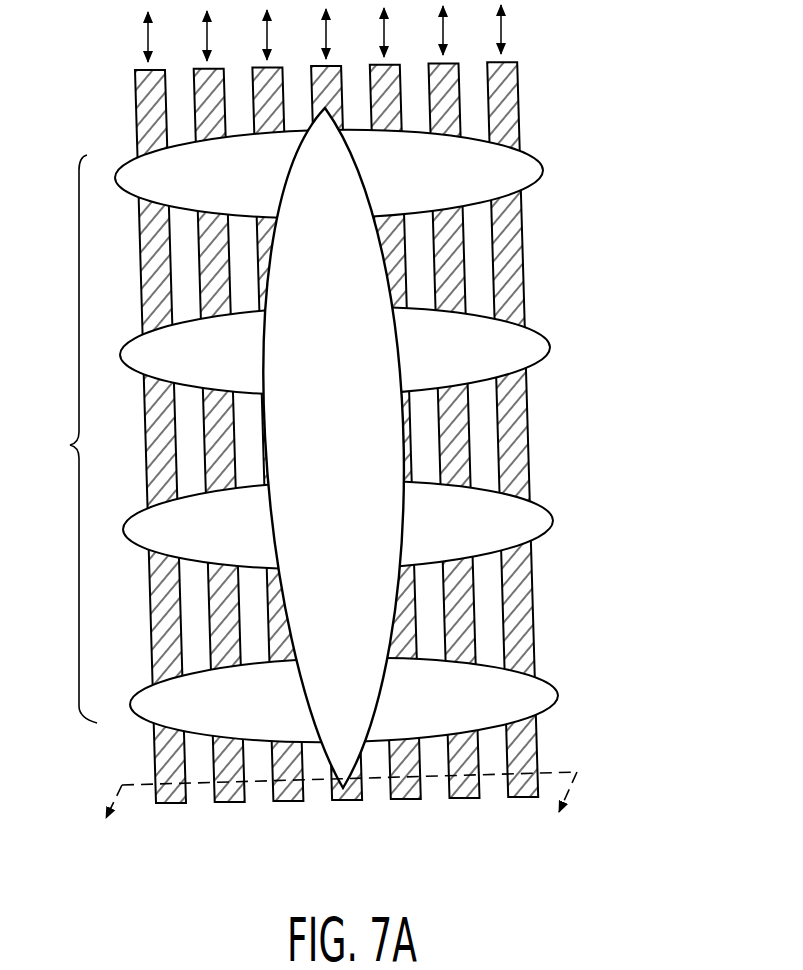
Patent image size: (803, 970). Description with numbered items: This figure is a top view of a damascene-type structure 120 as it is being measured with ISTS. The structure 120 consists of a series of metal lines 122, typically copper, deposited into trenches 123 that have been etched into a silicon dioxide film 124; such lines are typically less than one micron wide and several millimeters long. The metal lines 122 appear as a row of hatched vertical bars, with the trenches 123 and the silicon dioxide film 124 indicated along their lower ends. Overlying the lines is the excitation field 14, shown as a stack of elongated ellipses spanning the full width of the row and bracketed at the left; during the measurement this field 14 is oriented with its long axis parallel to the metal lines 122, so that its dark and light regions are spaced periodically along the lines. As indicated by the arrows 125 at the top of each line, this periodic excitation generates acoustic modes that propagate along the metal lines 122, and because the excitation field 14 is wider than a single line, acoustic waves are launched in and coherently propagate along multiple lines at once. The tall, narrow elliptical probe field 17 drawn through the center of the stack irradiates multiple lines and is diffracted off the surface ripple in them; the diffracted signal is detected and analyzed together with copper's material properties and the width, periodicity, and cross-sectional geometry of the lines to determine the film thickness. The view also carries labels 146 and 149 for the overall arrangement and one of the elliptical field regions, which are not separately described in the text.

The excitation radiation field 14 is at (63, 439).
The probe field 17 is at (350, 433).
The damascene-type structure 120 is at (588, 760).
The metal lines 122 is at (168, 806).
The trenches 123 is at (428, 801).
The silicon dioxide film 124 is at (258, 796).
The arrows 125 is at (503, 25).
The fin assembly 146 is at (569, 265).
The elliptical plates 149 is at (546, 176).